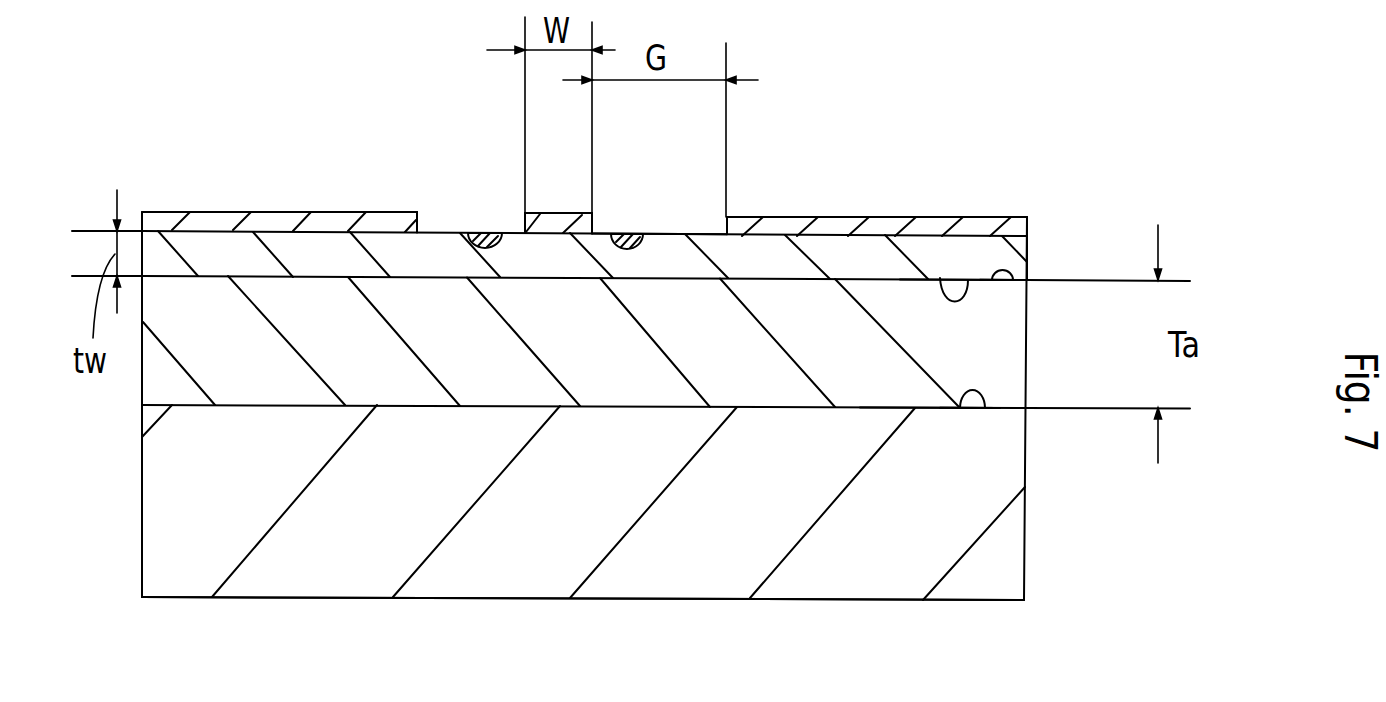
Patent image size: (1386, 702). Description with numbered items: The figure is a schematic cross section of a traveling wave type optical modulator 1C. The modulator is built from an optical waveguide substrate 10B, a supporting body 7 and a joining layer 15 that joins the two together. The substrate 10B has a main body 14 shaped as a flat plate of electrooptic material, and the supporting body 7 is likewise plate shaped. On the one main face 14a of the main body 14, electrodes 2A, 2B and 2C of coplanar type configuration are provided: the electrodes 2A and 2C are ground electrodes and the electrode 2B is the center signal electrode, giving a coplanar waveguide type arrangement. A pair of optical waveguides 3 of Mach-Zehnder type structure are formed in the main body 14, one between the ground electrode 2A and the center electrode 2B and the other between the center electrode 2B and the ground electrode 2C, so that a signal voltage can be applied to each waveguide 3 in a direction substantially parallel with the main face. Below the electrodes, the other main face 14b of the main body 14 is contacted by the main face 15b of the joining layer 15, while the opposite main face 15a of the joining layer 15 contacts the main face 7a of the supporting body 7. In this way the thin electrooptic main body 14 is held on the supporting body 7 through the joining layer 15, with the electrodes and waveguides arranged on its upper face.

The optical modulator 1C is at (1027, 192).
The ground electrode 2A is at (267, 221).
The center electrode 2B is at (548, 220).
The ground electrode 2C is at (777, 223).
The optical waveguide 3 is at (479, 232).
The supporting body 7 is at (1030, 482).
The main face of the supporting body 7a is at (983, 408).
The optical waveguide substrate 10B is at (1037, 233).
The main body 14 is at (1030, 270).
The main face of the main body 14a is at (881, 233).
The other main face of the main body 14b is at (972, 278).
The joining layer 15 is at (1017, 370).
The main face of the joining layer 15a is at (917, 412).
The main face of the joining layer 15b is at (1027, 282).